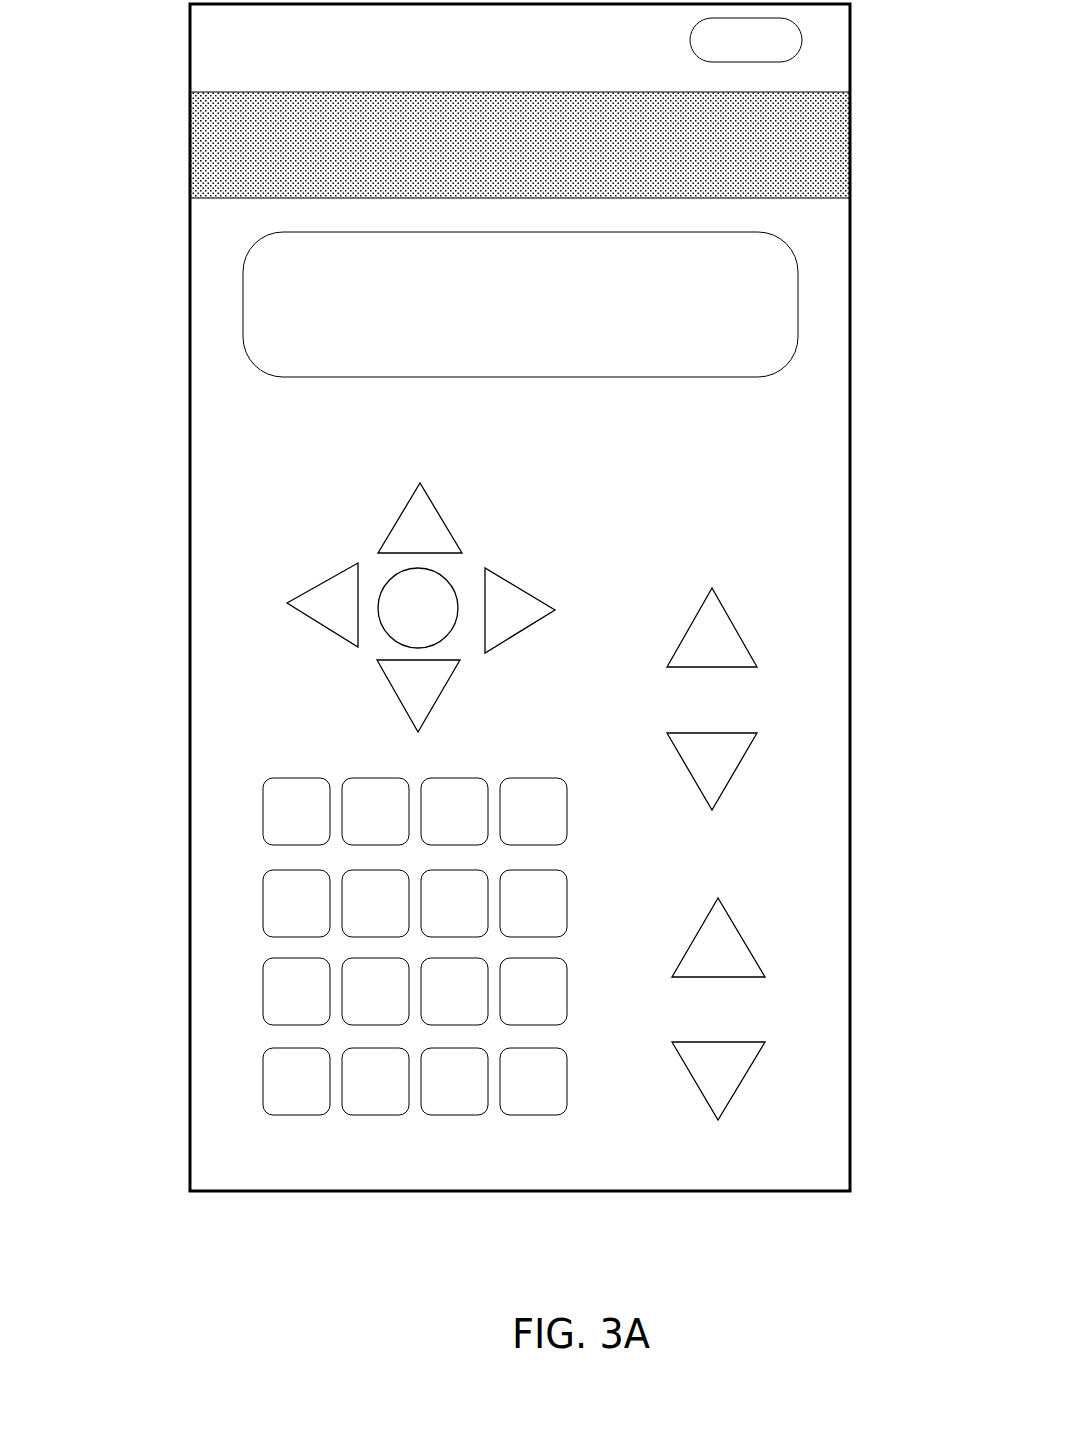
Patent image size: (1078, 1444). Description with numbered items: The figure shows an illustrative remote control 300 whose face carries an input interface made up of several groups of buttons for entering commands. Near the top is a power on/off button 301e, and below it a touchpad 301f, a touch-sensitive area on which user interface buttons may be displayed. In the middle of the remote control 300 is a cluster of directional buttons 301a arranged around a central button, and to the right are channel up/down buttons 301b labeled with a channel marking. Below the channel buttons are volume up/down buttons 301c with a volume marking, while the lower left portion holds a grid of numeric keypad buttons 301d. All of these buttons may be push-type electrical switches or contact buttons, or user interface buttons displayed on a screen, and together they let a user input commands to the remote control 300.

The remote control 300 is at (813, 1138).
The directional buttons 301a is at (307, 607).
The channel up/down buttons 301b is at (800, 674).
The volume up/down buttons 301c is at (802, 975).
The numeric keypad buttons 301d is at (302, 941).
The power on/off button 301e is at (802, 40).
The touchpad 301f is at (598, 304).